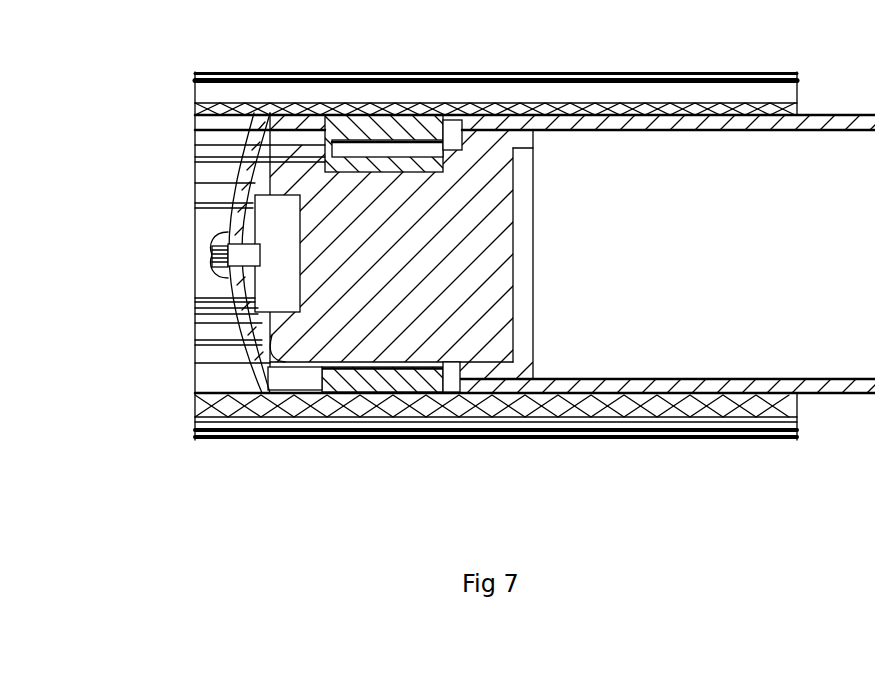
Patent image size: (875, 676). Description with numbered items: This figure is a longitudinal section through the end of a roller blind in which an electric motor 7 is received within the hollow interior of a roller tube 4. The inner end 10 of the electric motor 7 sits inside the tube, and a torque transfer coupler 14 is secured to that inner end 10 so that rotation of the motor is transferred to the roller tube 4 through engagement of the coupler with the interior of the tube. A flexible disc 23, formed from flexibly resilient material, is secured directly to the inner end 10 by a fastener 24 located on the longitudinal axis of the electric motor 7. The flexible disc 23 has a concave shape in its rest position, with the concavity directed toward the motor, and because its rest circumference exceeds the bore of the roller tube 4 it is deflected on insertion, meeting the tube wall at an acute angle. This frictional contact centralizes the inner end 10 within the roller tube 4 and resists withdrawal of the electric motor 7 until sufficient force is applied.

The roller tube 4 is at (430, 408).
The electric motor 7 is at (636, 343).
The inner end 10 is at (518, 405).
The torque transfer coupler 14 is at (345, 380).
The flexible disc 23 is at (237, 178).
The fastener 24 is at (213, 265).